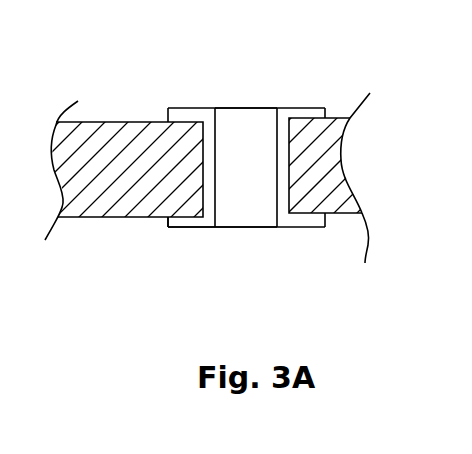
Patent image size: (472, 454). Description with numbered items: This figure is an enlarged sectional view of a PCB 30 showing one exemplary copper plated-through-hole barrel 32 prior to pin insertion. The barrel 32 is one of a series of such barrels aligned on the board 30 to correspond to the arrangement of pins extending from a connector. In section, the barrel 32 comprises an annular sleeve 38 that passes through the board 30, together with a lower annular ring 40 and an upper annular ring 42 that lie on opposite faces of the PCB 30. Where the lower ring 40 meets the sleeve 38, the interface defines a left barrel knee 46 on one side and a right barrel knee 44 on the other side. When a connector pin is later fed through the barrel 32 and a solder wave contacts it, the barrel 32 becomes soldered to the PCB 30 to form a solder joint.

The PCB 30 is at (83, 205).
The PTH barrel 32 is at (311, 104).
The annular sleeve 38 is at (278, 195).
The lower annular ring 40 is at (310, 217).
The upper annular ring 42 is at (285, 115).
The right barrel knee 44 is at (262, 228).
The left barrel knee 46 is at (205, 220).